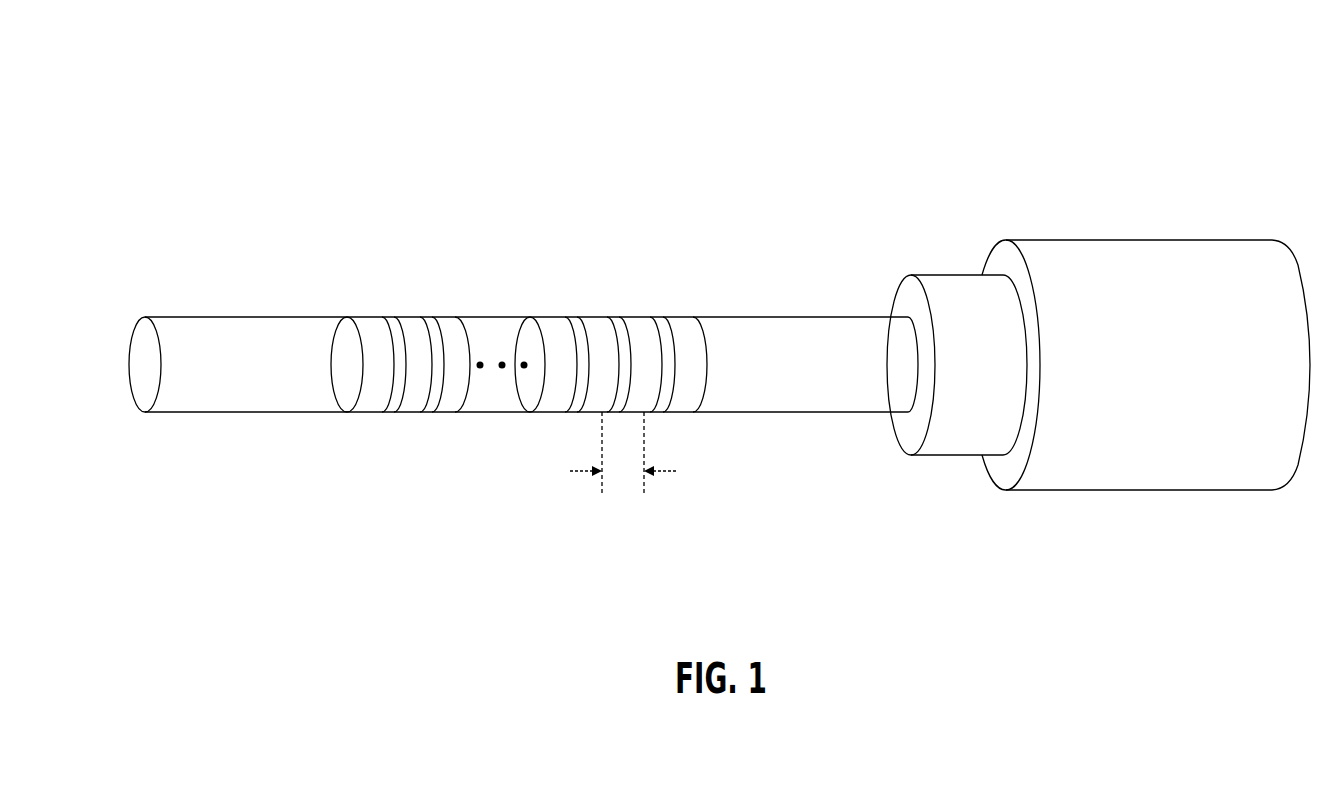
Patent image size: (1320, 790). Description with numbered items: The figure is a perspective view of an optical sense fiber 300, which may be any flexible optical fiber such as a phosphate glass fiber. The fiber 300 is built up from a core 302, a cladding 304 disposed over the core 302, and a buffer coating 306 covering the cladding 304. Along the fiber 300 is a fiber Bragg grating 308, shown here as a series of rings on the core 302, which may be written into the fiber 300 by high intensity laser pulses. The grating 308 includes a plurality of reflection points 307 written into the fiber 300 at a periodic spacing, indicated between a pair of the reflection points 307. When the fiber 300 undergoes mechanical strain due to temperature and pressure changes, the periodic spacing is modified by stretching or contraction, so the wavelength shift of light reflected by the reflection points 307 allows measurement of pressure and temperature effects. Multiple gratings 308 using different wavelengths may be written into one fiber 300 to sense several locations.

The optical sense fiber 300 is at (430, 91).
The core 302 is at (226, 326).
The cladding 304 is at (953, 284).
The buffer coating 306 is at (1153, 252).
The reflection points 307 is at (632, 317).
The fiber Bragg grating 308 is at (345, 253).